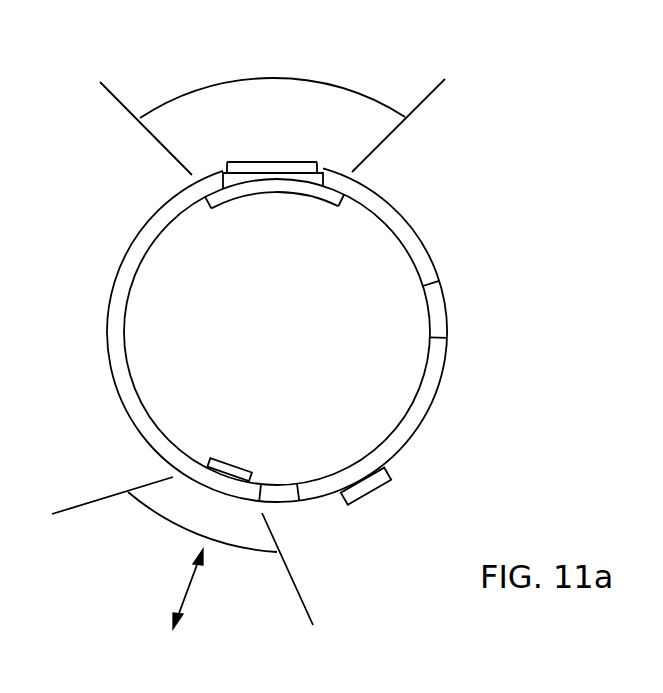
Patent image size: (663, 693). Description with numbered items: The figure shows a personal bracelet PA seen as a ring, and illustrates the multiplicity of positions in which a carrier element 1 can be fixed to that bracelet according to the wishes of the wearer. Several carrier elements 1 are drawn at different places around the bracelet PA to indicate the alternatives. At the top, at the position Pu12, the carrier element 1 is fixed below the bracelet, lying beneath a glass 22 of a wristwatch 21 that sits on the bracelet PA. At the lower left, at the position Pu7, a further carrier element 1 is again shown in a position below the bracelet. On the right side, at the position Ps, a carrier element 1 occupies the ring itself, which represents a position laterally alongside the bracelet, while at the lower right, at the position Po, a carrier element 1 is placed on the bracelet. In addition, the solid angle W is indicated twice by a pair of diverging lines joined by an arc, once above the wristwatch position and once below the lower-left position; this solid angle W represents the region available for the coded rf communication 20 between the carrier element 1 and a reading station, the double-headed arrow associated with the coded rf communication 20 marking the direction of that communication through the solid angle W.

The carrier element 1 is at (243, 197).
The coded rf communication 20 is at (190, 590).
The wristwatch 21 is at (271, 161).
The glass 22 is at (300, 161).
The personal bracelet PA is at (112, 324).
The position below the bracelet at twelve o'clock Pu12 is at (276, 193).
The position below the bracelet at seven o'clock Pu7 is at (233, 455).
The position laterally alongside the bracelet Ps is at (442, 294).
The position on the bracelet Po is at (377, 486).
The solid angle W is at (271, 79).